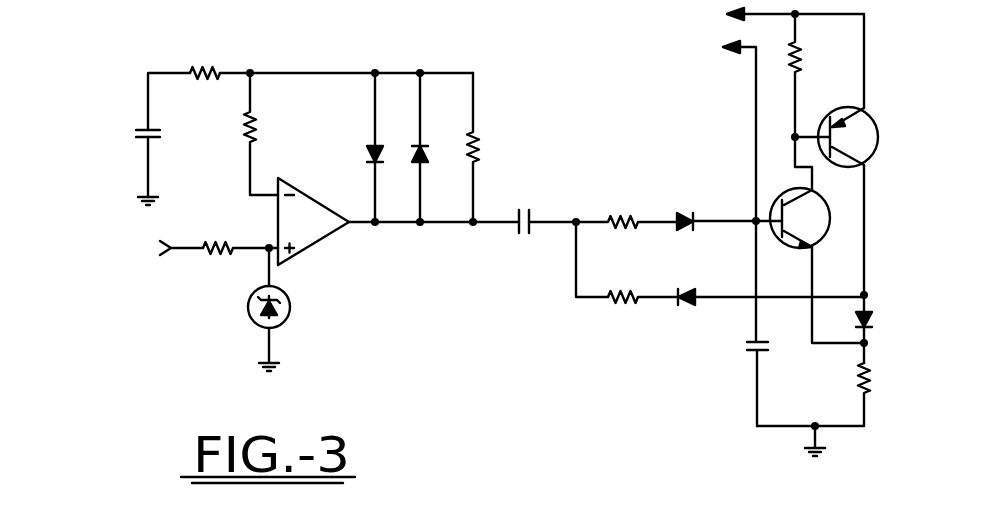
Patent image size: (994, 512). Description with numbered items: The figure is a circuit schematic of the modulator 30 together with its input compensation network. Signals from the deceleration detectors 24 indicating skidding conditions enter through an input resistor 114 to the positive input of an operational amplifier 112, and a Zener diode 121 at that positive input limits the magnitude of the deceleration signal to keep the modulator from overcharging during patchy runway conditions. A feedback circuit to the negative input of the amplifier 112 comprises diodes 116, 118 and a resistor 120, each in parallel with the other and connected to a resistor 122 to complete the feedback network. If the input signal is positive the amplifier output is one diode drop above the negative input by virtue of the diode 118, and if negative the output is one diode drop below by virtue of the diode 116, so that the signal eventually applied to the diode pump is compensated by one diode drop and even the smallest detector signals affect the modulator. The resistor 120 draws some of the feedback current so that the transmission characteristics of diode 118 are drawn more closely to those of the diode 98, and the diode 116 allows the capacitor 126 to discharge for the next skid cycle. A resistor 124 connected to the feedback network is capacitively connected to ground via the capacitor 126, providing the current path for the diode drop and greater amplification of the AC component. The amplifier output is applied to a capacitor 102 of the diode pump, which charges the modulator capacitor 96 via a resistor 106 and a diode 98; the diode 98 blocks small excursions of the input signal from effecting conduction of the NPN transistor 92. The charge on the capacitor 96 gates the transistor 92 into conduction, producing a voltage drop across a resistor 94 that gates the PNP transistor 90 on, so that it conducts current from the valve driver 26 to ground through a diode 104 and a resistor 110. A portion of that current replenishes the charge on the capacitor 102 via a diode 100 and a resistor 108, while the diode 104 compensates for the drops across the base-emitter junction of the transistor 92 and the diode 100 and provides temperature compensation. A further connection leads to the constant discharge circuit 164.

The resistor 124 is at (205, 60).
The capacitor 126 is at (166, 133).
The resistor 122 is at (270, 134).
The operational amplifier 112 is at (299, 249).
The input resistor 114 is at (240, 236).
The deceleration detectors 24 is at (140, 272).
The Zener diode 121 is at (288, 309).
The diode 116 is at (355, 147).
The diode 118 is at (439, 147).
The resistor 120 is at (492, 147).
The capacitor 102 is at (523, 210).
The resistor 106 is at (626, 208).
The diode 98 is at (713, 209).
The resistor 108 is at (641, 284).
The diode 100 is at (767, 285).
The valve driver 26 is at (670, 56).
The constant discharge circuit 164 is at (616, 129).
The resistor 94 is at (811, 102).
The PNP transistor 90 is at (877, 131).
The NPN transistor 92 is at (826, 232).
The diode 104 is at (885, 329).
The resistor 110 is at (835, 394).
The modulator capacitor 96 is at (741, 323).
The modulator 30 is at (620, 407).